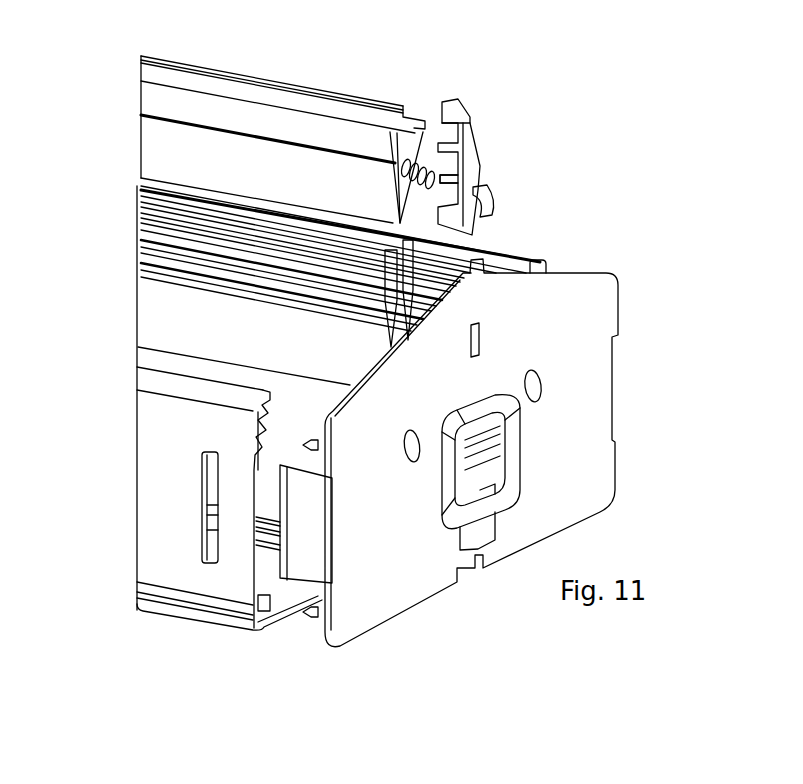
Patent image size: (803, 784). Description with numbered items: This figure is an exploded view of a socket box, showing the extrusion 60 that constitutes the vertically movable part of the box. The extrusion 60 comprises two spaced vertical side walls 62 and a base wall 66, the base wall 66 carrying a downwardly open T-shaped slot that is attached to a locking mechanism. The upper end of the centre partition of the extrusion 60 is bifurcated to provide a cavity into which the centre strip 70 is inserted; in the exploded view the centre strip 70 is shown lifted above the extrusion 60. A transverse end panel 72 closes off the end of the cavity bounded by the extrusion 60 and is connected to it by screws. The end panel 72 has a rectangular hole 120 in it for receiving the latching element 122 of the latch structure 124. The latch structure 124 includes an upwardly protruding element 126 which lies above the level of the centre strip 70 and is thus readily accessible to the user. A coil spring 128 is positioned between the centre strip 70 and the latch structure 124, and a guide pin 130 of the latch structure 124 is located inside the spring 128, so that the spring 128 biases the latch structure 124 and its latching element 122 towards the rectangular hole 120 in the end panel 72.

The centre strip 70 is at (253, 124).
The coil spring 128 is at (420, 165).
The upwardly protruding element 126 is at (462, 105).
The latch structure 124 is at (515, 142).
The guide pin 130 is at (450, 178).
The latching element 122 is at (492, 207).
The extrusion 60 is at (540, 263).
The rectangular hole 120 is at (483, 330).
The transverse end panel 72 is at (575, 410).
The side wall 62 is at (177, 433).
The base wall 66 is at (293, 617).